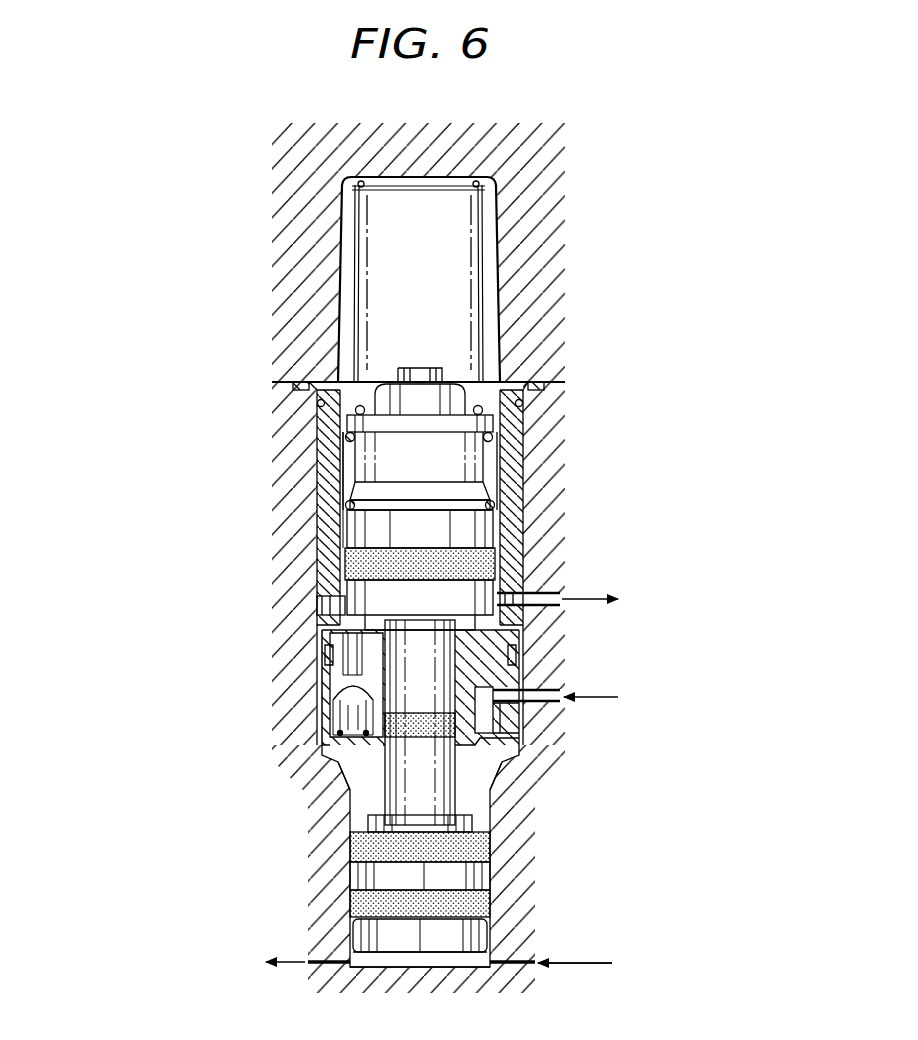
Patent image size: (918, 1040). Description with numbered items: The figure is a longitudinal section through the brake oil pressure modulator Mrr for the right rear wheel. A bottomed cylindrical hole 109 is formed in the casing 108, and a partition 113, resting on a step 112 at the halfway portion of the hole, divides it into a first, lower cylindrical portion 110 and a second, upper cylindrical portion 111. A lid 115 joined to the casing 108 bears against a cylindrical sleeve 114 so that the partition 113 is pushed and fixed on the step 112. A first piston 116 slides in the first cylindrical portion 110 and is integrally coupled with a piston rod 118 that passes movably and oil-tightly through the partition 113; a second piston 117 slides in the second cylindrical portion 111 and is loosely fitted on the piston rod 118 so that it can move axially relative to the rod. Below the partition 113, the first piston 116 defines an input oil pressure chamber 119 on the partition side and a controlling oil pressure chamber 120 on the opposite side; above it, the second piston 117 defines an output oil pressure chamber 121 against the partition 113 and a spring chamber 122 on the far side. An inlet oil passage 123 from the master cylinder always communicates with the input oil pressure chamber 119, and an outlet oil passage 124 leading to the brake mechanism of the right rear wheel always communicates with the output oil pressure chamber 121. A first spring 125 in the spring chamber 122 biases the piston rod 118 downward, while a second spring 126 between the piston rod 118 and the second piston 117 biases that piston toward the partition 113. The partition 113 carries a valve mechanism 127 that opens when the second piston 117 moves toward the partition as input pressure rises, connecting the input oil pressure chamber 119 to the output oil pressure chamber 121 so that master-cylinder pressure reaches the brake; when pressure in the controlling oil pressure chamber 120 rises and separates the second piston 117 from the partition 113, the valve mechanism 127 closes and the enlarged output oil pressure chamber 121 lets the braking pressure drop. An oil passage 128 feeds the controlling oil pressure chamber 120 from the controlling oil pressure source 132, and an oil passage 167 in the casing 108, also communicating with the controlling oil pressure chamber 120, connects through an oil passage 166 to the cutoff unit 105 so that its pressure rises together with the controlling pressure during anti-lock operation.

The lid 115 is at (540, 270).
The spring chamber 122 is at (402, 200).
The first spring 125 is at (470, 232).
The casing 108 is at (542, 520).
The bottomed cylindrical hole 109 is at (530, 486).
The output oil pressure chamber 121 is at (330, 604).
The outlet oil passage 124 is at (555, 584).
The second cylindrical portion 111 is at (332, 544).
The second spring 126 is at (500, 436).
The cylindrical sleeve 114 is at (505, 565).
The second piston 117 is at (340, 522).
The partition 113 is at (520, 670).
The valve mechanism 127 is at (326, 727).
The inlet oil passage 123 is at (540, 710).
The step 112 is at (525, 740).
The piston rod 118 is at (438, 792).
The first cylindrical portion 110 is at (348, 822).
The input oil pressure chamber 119 is at (355, 770).
The first piston 116 is at (352, 878).
The brake oil pressure modulator Mrr is at (284, 657).
The controlling oil pressure source 132 is at (172, 964).
The cutoff valve 105 is at (672, 962).
The oil passage 128 is at (330, 970).
The controlling oil pressure chamber 120 is at (394, 970).
The oil passage 167 is at (515, 968).
The oil passage 166 is at (585, 966).